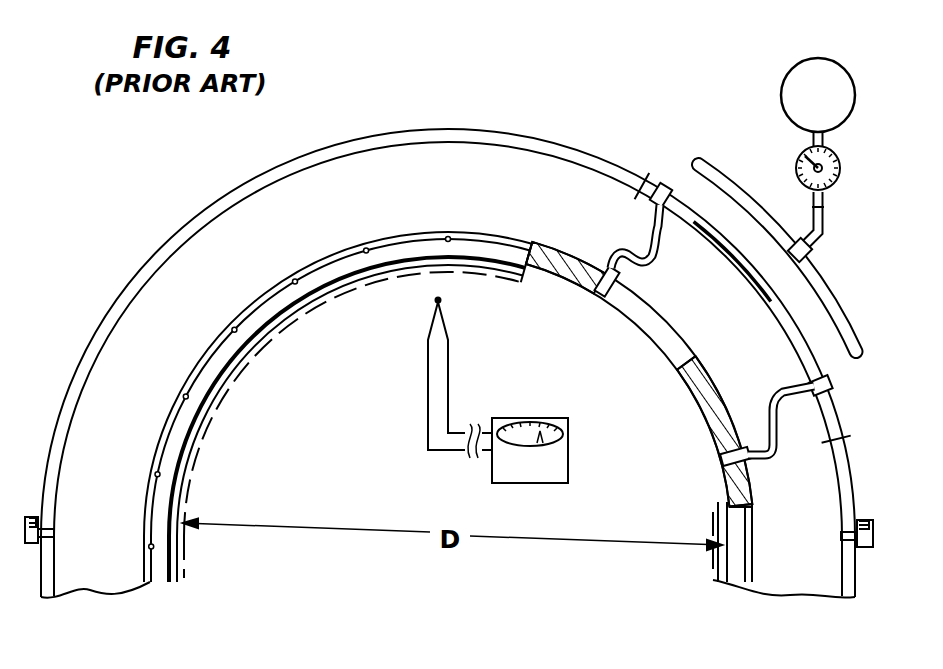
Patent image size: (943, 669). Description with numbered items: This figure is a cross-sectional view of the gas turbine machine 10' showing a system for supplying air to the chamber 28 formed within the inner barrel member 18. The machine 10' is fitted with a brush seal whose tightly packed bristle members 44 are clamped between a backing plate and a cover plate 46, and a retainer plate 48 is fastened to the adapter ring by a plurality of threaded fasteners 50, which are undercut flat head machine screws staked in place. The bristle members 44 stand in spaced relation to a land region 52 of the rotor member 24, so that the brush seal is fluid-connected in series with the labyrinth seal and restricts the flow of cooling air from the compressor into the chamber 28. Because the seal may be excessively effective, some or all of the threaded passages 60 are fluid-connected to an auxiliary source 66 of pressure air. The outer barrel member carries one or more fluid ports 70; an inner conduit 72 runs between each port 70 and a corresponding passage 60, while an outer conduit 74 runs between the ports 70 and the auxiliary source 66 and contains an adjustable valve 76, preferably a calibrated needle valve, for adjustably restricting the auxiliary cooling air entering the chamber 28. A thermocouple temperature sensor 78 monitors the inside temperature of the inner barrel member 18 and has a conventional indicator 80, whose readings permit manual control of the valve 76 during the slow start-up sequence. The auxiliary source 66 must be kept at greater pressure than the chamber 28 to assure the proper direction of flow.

The gas turbine machine 10' is at (455, 598).
The inner barrel member 18 is at (722, 405).
The rotor member 24 is at (176, 460).
The chamber 28 is at (640, 501).
The bristle members 44 is at (216, 386).
The cover plate 46 is at (337, 292).
The retainer plate 48 is at (353, 264).
The threaded fasteners 50 is at (232, 342).
The land region 52 is at (186, 447).
The threaded passages 60 is at (590, 300).
The auxiliary source 66 is at (783, 108).
The fluid ports 70 is at (653, 186).
The inner conduit 72 is at (662, 247).
The outer conduit 74 is at (760, 205).
The adjustable valve 76 is at (840, 177).
The thermocouple temperature sensor 78 is at (446, 320).
The indicator 80 is at (522, 418).